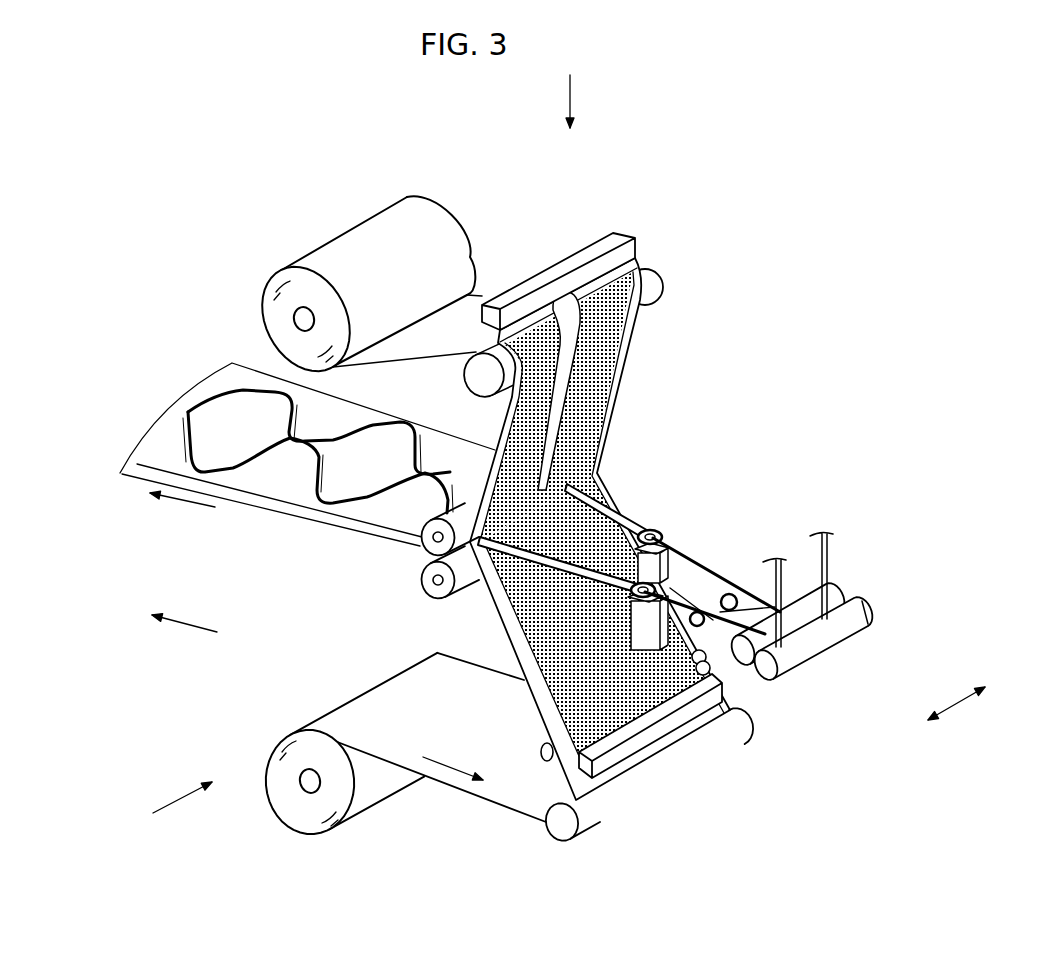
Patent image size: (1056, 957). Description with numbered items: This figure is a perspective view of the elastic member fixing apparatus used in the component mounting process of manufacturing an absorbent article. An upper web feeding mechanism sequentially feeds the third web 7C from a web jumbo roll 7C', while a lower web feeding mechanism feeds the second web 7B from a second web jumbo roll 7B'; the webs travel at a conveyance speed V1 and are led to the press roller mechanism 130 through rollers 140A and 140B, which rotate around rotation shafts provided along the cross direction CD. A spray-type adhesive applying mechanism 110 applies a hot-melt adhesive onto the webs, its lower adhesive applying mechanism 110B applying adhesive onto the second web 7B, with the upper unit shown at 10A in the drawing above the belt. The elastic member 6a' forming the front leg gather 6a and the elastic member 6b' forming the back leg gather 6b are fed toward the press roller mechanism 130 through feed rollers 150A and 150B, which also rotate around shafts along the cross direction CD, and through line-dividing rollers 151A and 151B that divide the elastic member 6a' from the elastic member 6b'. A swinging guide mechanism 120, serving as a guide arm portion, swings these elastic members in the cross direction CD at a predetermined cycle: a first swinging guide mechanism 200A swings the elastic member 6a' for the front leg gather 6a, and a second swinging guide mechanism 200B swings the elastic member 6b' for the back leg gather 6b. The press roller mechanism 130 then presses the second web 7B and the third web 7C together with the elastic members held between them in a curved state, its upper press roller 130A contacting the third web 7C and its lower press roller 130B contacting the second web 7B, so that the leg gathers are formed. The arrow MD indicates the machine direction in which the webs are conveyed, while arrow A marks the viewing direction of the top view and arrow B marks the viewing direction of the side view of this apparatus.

The web jumbo roll 7C' is at (334, 283).
The third web 7C is at (422, 305).
The first conveying body 10A is at (620, 203).
The adhesive applying mechanism 110 is at (655, 498).
The lower adhesive applying mechanism 110B is at (667, 733).
The roller 140A is at (668, 249).
The roller 140B is at (547, 833).
The front leg gather 6a is at (307, 454).
The back leg gather 6b is at (318, 477).
The elastic member 6a' is at (857, 575).
The elastic member 6b' is at (786, 573).
The swinging guide mechanism 120 is at (624, 521).
The first swinging guide mechanism 200A is at (650, 528).
The second swinging guide mechanism 200B is at (575, 597).
The press roller mechanism 130 is at (378, 566).
The upper press roller 130A is at (422, 542).
The lower press roller 130B is at (422, 598).
The line-dividing roller 151A is at (716, 612).
The line-dividing roller 151B is at (866, 603).
The feed roller 150A is at (747, 673).
The feed roller 150B is at (840, 634).
The second web jumbo roll 7B' is at (332, 749).
The second web 7B is at (426, 747).
The arrow A is at (568, 88).
The arrow B is at (171, 808).
The machine direction arrow MD is at (184, 636).
The cross direction CD is at (956, 697).
The conveyance speed V1 is at (182, 512).